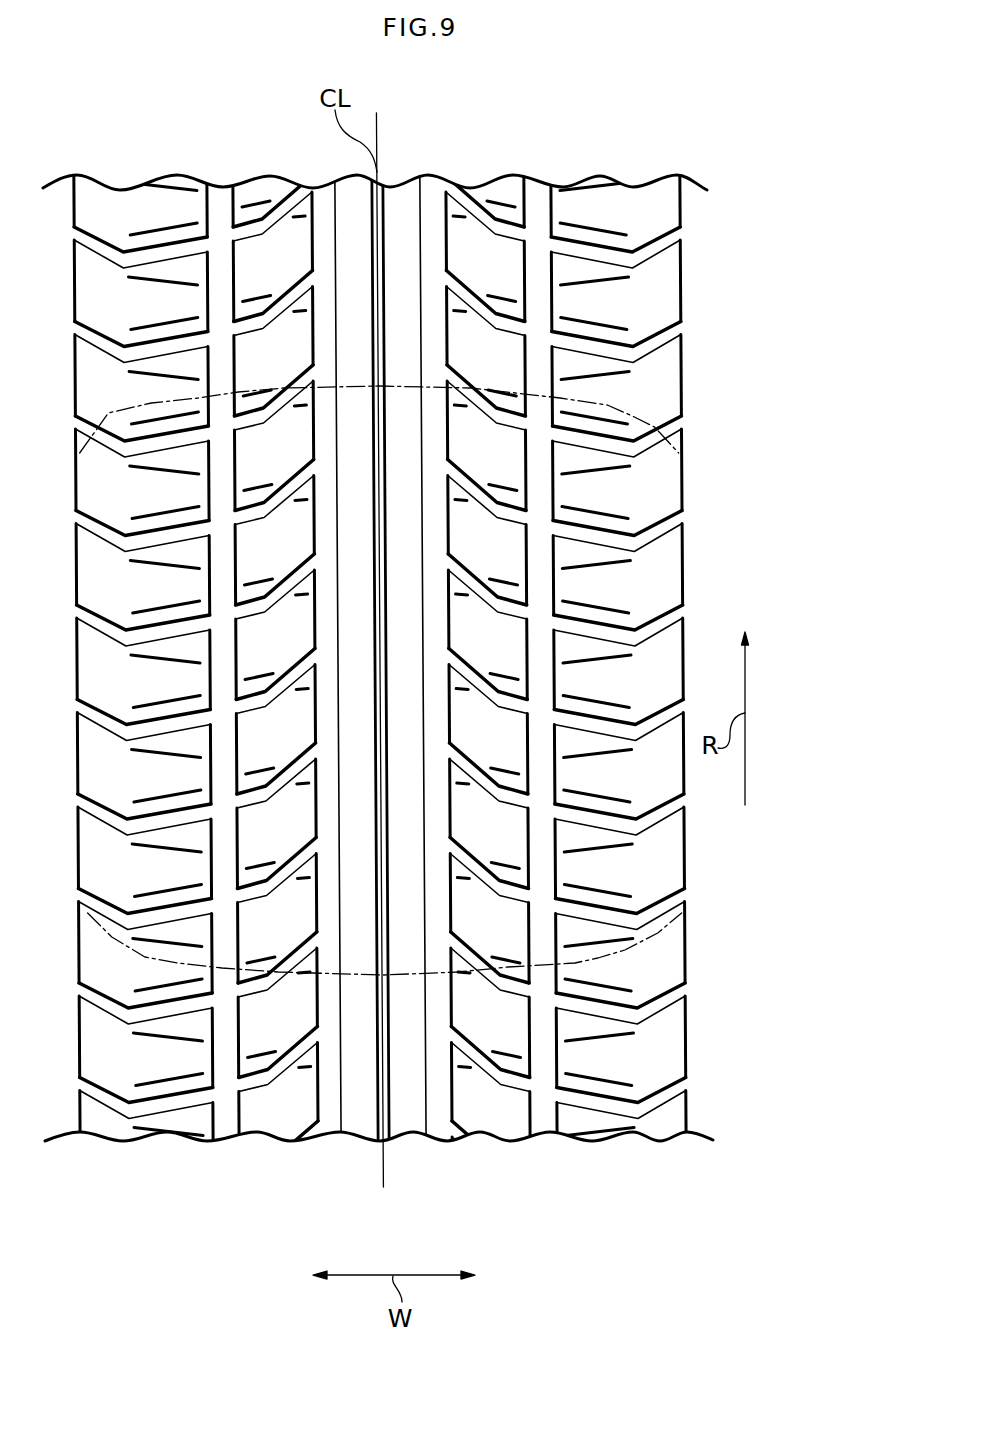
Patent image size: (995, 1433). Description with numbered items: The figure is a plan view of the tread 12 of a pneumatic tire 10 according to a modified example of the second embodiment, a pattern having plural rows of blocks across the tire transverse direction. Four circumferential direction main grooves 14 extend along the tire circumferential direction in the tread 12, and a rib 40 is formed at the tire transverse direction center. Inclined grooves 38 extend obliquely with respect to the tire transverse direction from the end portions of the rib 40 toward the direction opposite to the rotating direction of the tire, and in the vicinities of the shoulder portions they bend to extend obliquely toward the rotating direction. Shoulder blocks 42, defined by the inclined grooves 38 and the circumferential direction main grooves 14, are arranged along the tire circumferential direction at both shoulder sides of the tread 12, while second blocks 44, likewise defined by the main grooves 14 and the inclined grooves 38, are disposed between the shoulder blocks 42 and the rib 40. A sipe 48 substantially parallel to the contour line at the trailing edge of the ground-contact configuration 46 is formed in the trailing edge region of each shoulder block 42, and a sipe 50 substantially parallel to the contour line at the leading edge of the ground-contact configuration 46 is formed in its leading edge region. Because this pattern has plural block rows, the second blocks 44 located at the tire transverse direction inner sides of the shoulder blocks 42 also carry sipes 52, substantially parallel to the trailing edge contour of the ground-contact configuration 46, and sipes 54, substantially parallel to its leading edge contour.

The pneumatic tire 10 is at (641, 164).
The tread 12 is at (484, 177).
The circumferential direction main grooves 14 is at (225, 1107).
The inclined grooves 38 is at (675, 456).
The rib 40 is at (362, 1113).
The shoulder blocks 42 is at (633, 493).
The second blocks 44 is at (507, 273).
The ground-contact configuration 46 is at (430, 383).
The sipe 48 is at (605, 418).
The sipe 50 is at (620, 377).
The sipes 52 is at (515, 398).
The sipes 54 is at (460, 977).